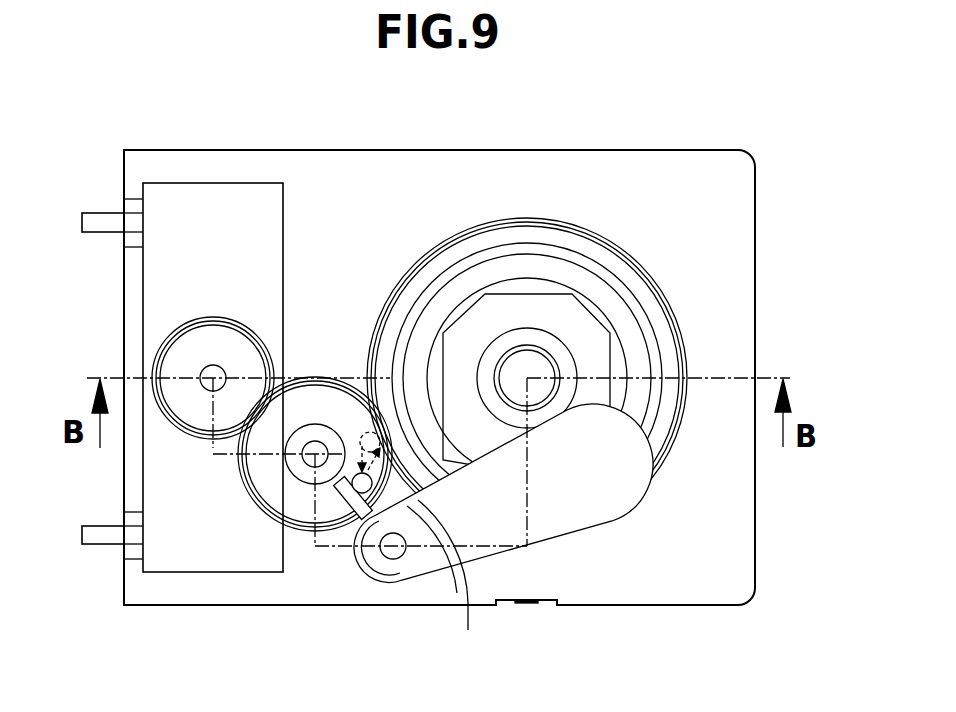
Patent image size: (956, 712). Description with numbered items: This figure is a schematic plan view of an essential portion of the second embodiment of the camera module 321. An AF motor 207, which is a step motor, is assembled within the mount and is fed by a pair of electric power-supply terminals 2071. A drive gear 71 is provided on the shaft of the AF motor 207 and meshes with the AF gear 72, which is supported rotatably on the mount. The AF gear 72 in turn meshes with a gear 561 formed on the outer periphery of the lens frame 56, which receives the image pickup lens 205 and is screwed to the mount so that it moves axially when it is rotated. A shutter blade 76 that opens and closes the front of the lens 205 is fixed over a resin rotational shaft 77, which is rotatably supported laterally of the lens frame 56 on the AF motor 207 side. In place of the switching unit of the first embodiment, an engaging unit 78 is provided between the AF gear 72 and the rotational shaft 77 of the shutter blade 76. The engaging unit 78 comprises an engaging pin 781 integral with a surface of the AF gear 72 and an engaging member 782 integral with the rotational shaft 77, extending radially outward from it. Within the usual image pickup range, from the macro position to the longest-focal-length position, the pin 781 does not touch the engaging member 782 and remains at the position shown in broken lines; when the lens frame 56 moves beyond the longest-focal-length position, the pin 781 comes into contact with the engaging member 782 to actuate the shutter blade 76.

The camera module 321 is at (731, 126).
The electric power-supply terminals 2071 is at (100, 222).
The AF motor 207 is at (247, 197).
The drive gear 71 is at (184, 322).
The AF gear 72 is at (322, 379).
The lens frame 56 is at (527, 306).
The gear 561 is at (465, 232).
The image pickup lens 205 is at (526, 313).
The shutter blade 76 is at (504, 531).
The rotational shaft 77 is at (400, 556).
The engaging pin 781 is at (435, 579).
The engaging unit 78 is at (346, 538).
The engaging member 782 is at (306, 527).